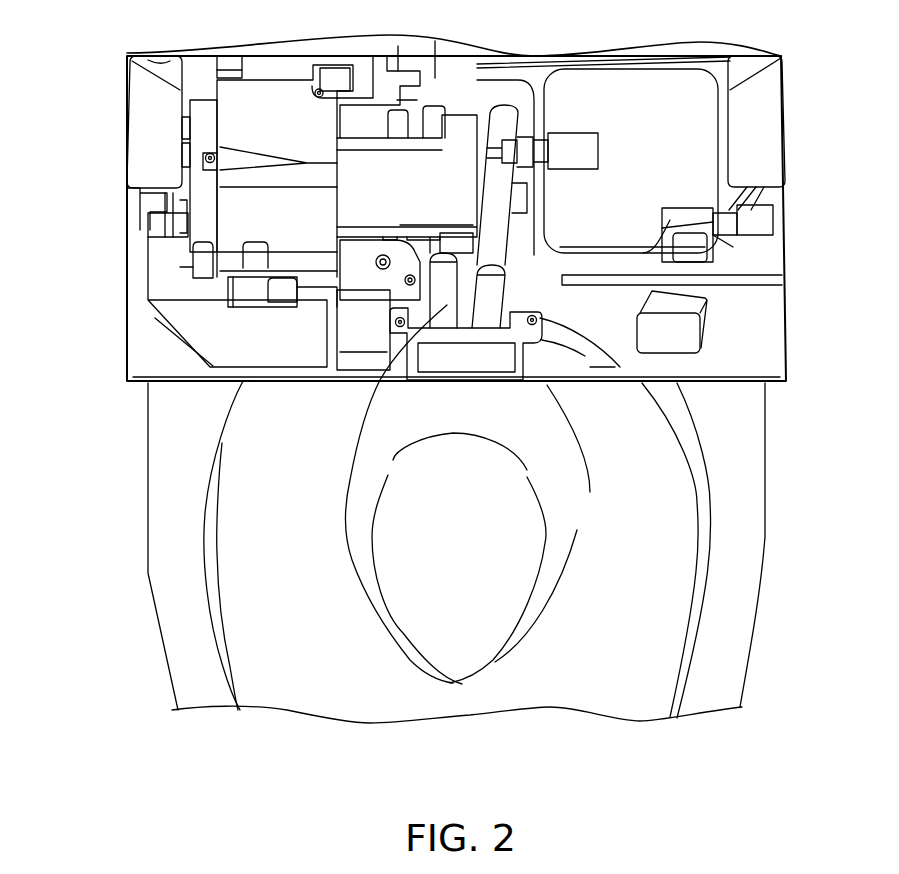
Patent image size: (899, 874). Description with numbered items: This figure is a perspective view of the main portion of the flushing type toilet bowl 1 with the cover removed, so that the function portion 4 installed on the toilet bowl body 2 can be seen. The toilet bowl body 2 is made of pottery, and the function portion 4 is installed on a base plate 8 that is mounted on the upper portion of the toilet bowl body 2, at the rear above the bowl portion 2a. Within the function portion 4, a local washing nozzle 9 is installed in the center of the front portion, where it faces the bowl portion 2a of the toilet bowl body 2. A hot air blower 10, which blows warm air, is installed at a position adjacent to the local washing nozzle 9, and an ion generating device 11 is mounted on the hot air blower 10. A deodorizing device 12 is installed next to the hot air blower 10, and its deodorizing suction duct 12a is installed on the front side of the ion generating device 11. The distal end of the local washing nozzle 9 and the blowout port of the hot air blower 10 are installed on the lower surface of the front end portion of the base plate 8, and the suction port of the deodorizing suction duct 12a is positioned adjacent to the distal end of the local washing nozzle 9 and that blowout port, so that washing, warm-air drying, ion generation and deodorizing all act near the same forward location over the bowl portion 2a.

The flushing type toilet bowl 1 is at (86, 176).
The toilet bowl body 2 is at (153, 572).
The bowl portion 2a is at (663, 598).
The function portion 4 is at (106, 87).
The base plate 8 is at (738, 358).
The local washing nozzle 9 is at (351, 363).
The hot air blower 10 is at (222, 434).
The ion generating device 11 is at (308, 297).
The deodorizing device 12 is at (157, 260).
The deodorizing suction duct 12a is at (238, 346).